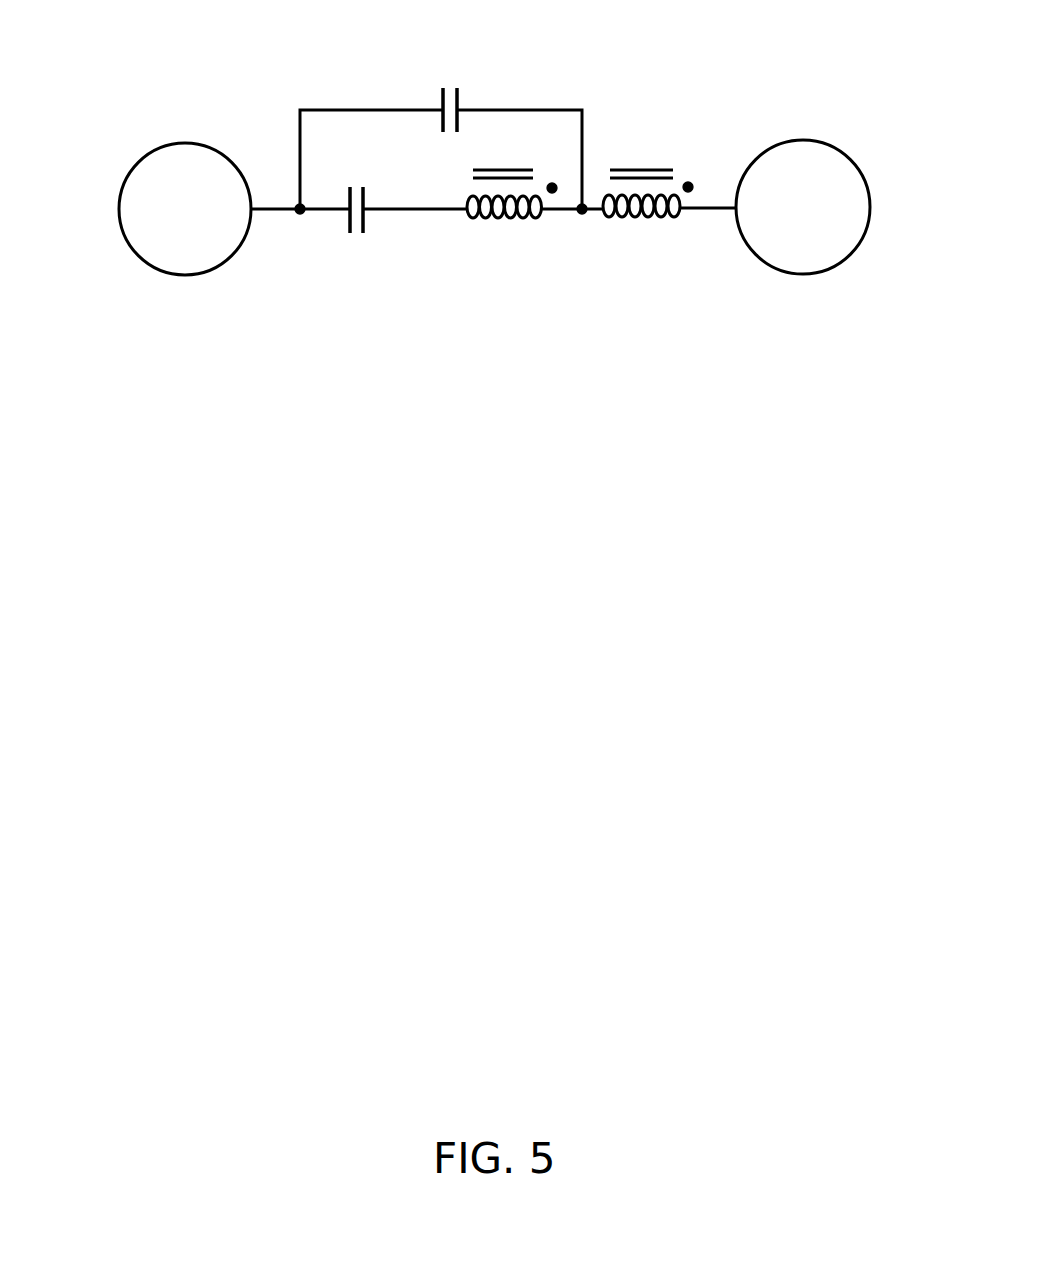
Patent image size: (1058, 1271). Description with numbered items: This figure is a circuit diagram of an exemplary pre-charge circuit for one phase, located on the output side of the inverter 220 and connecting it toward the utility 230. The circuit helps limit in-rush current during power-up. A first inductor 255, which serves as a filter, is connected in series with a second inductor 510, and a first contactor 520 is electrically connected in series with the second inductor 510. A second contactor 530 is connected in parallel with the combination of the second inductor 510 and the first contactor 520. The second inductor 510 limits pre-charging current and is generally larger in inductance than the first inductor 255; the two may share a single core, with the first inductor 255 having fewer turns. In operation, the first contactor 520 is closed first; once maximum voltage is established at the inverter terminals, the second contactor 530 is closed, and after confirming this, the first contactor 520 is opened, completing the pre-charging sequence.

The utility 230 is at (157, 143).
The inverter 220 is at (843, 137).
The first inductor 255 is at (690, 170).
The second inductor 510 is at (538, 240).
The first contactor 520 is at (375, 242).
The second contactor 530 is at (485, 78).